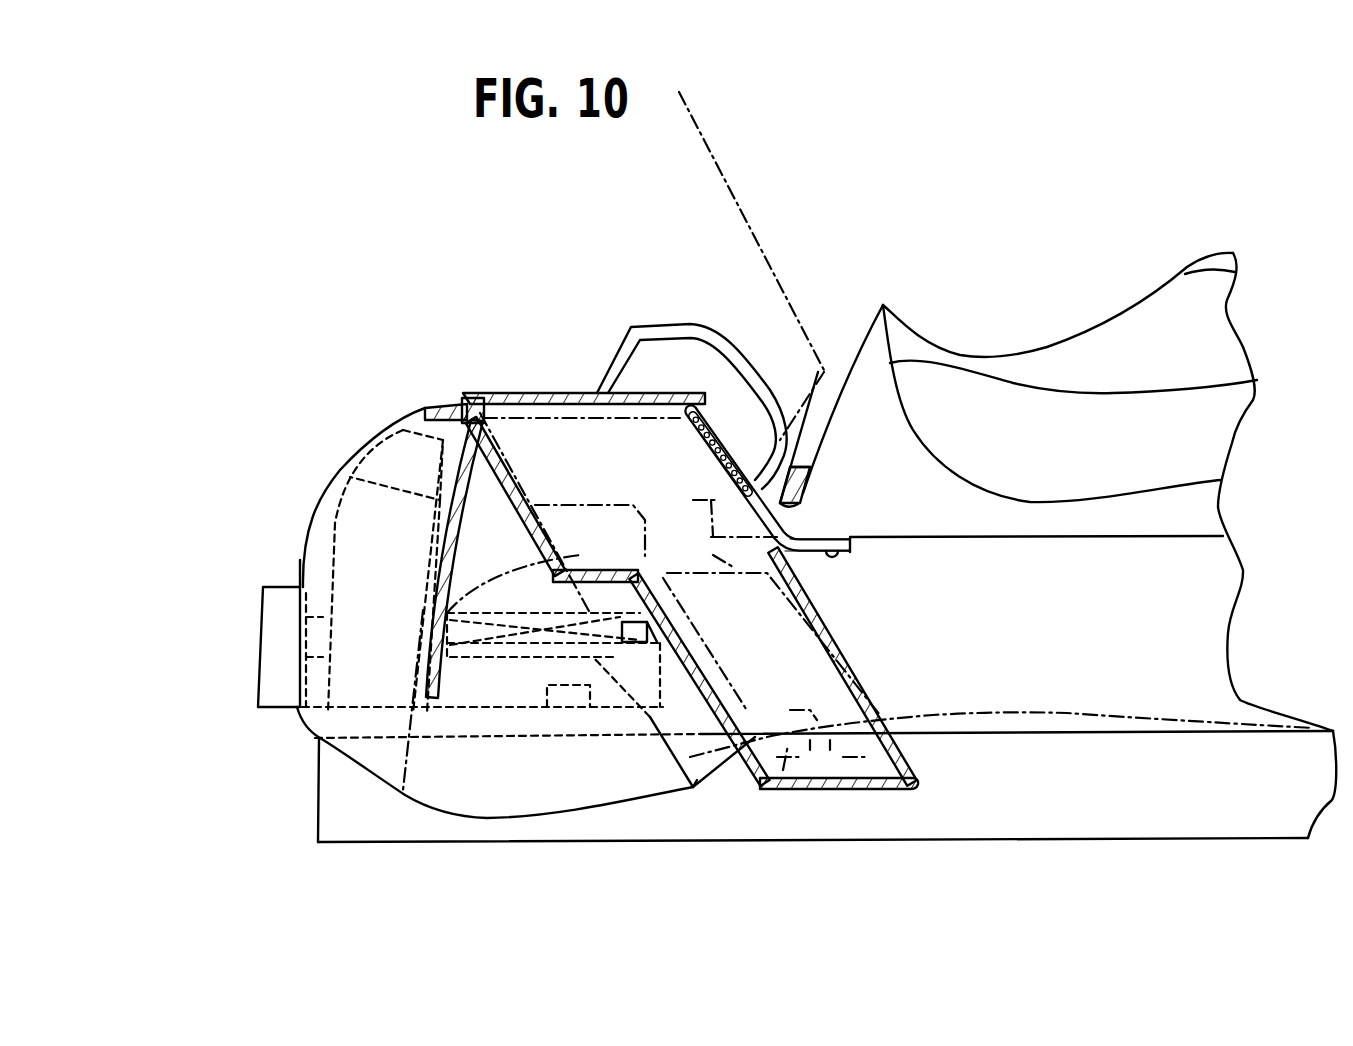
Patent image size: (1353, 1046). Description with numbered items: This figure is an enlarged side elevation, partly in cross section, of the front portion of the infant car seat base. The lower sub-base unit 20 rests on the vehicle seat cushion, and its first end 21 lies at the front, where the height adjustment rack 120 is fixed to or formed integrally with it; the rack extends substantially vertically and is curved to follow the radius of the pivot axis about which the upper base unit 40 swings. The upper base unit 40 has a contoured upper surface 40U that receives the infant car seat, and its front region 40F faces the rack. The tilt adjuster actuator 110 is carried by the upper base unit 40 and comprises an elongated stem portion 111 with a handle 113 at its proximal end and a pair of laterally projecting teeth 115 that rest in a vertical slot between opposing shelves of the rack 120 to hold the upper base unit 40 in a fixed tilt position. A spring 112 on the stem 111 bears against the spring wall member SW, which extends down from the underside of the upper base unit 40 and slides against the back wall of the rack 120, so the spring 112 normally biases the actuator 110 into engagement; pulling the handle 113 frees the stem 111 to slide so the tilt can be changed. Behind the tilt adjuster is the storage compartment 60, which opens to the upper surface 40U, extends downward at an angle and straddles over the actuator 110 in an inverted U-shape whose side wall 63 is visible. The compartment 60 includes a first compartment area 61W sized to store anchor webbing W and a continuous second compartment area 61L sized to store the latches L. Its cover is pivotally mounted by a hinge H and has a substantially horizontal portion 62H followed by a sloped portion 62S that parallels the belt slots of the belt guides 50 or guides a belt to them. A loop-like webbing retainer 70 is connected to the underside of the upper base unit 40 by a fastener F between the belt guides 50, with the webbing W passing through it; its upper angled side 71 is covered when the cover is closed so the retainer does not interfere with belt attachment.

The sub-base unit 20 is at (997, 807).
The first end of the sub-base unit 21 is at (317, 830).
The upper base unit 40 is at (1150, 313).
The contoured upper surface 40U is at (1017, 353).
The seat cushion front portion 40F is at (331, 484).
The belt guides 50 is at (677, 327).
The storage compartment 60 is at (478, 393).
The first compartment area 61W is at (627, 481).
The second compartment area 61L is at (760, 641).
The horizontal portion of the cover 62H is at (755, 183).
The sloped portion of the cover 62S is at (737, 417).
The side wall of the storage compartment 63 is at (697, 780).
The webbing retainer 70 is at (693, 397).
The upper angled side of the webbing retainer 71 is at (793, 507).
The actuator 110 is at (236, 612).
The stem portion 111 is at (515, 697).
The spring 112 is at (477, 613).
The handle 113 is at (270, 682).
The laterally projecting teeth 115 is at (290, 713).
The height adjustment rack 120 is at (333, 560).
The anchor straps/webbing W is at (554, 418).
The spring wall member SW is at (457, 557).
The hinge H is at (813, 474).
The fastener F is at (830, 553).
The latches L is at (783, 770).